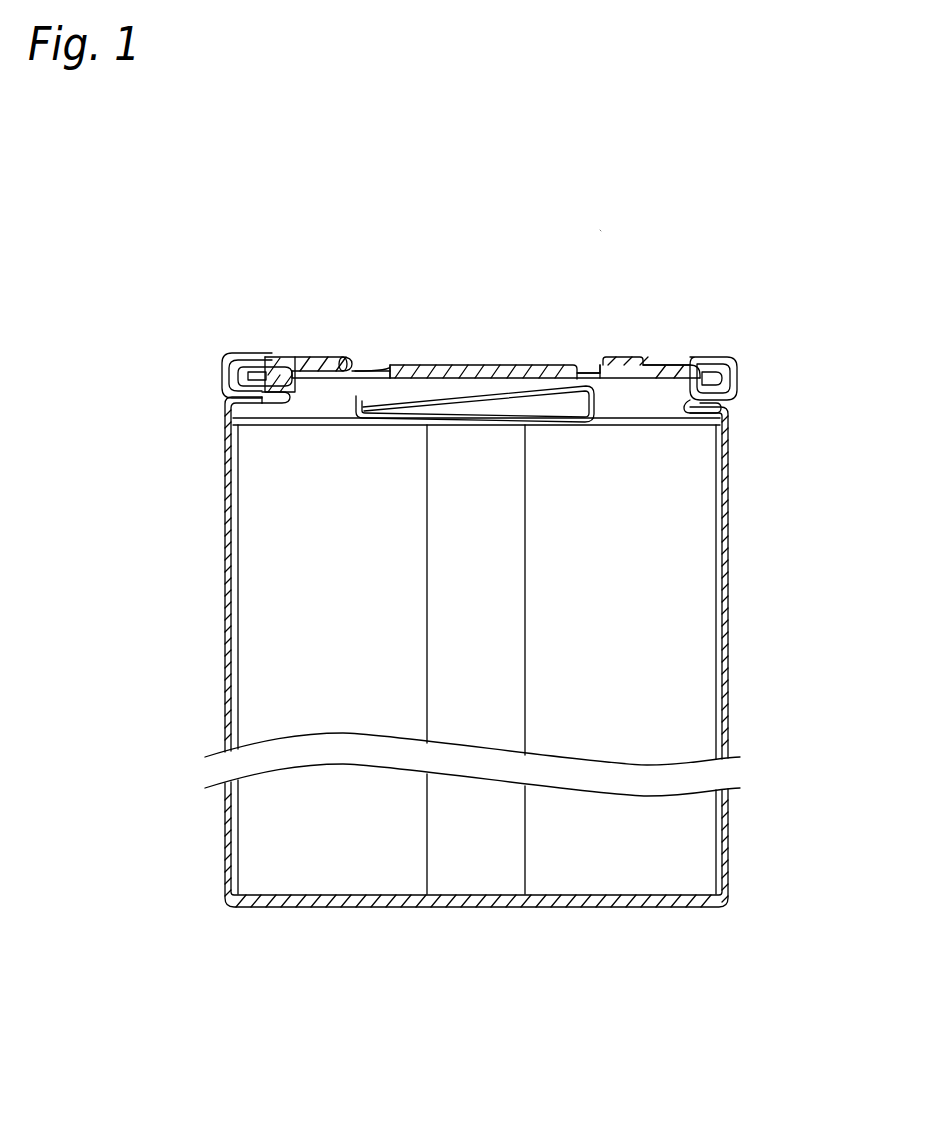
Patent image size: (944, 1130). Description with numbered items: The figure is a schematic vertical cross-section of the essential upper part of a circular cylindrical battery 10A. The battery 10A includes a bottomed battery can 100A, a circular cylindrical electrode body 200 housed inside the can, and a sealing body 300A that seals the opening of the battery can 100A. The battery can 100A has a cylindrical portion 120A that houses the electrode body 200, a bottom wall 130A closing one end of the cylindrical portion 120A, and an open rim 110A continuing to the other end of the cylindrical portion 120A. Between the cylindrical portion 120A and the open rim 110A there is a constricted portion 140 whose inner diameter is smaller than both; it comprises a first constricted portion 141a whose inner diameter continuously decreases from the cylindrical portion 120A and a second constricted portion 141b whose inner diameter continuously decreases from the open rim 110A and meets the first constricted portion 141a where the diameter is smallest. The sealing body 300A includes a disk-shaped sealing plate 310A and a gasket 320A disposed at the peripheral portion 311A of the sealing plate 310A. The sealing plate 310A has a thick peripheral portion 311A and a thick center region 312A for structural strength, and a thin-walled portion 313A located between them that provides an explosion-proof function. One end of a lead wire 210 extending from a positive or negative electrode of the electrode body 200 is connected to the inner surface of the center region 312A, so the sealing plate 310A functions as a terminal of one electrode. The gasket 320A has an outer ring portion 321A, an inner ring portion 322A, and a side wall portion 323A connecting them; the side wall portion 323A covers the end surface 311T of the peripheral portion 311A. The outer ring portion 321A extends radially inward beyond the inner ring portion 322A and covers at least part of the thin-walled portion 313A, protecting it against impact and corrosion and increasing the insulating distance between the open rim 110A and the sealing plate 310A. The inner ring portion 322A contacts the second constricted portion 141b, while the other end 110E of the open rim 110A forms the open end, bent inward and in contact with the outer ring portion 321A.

The battery 10A is at (603, 227).
The battery can 100A is at (807, 353).
The open rim 110A is at (743, 353).
The other end of the open rim 110E is at (693, 352).
The cylindrical portion 120A is at (745, 905).
The bottom wall 130A is at (483, 907).
The constricted portion 140 is at (150, 397).
The first constricted portion 141a is at (232, 412).
The second constricted portion 141b is at (228, 398).
The electrode body 200 is at (270, 635).
The lead wire 210 is at (523, 395).
The sealing body 300A is at (388, 258).
The sealing plate 310A is at (438, 293).
The peripheral portion 311A is at (293, 362).
The end surface 311T is at (722, 384).
The center region 312A is at (395, 365).
The thin-walled portion 313A is at (343, 358).
The gasket 320A is at (292, 293).
The outer ring portion 321A is at (262, 362).
The inner ring portion 322A is at (226, 393).
The side wall portion 323A is at (240, 385).